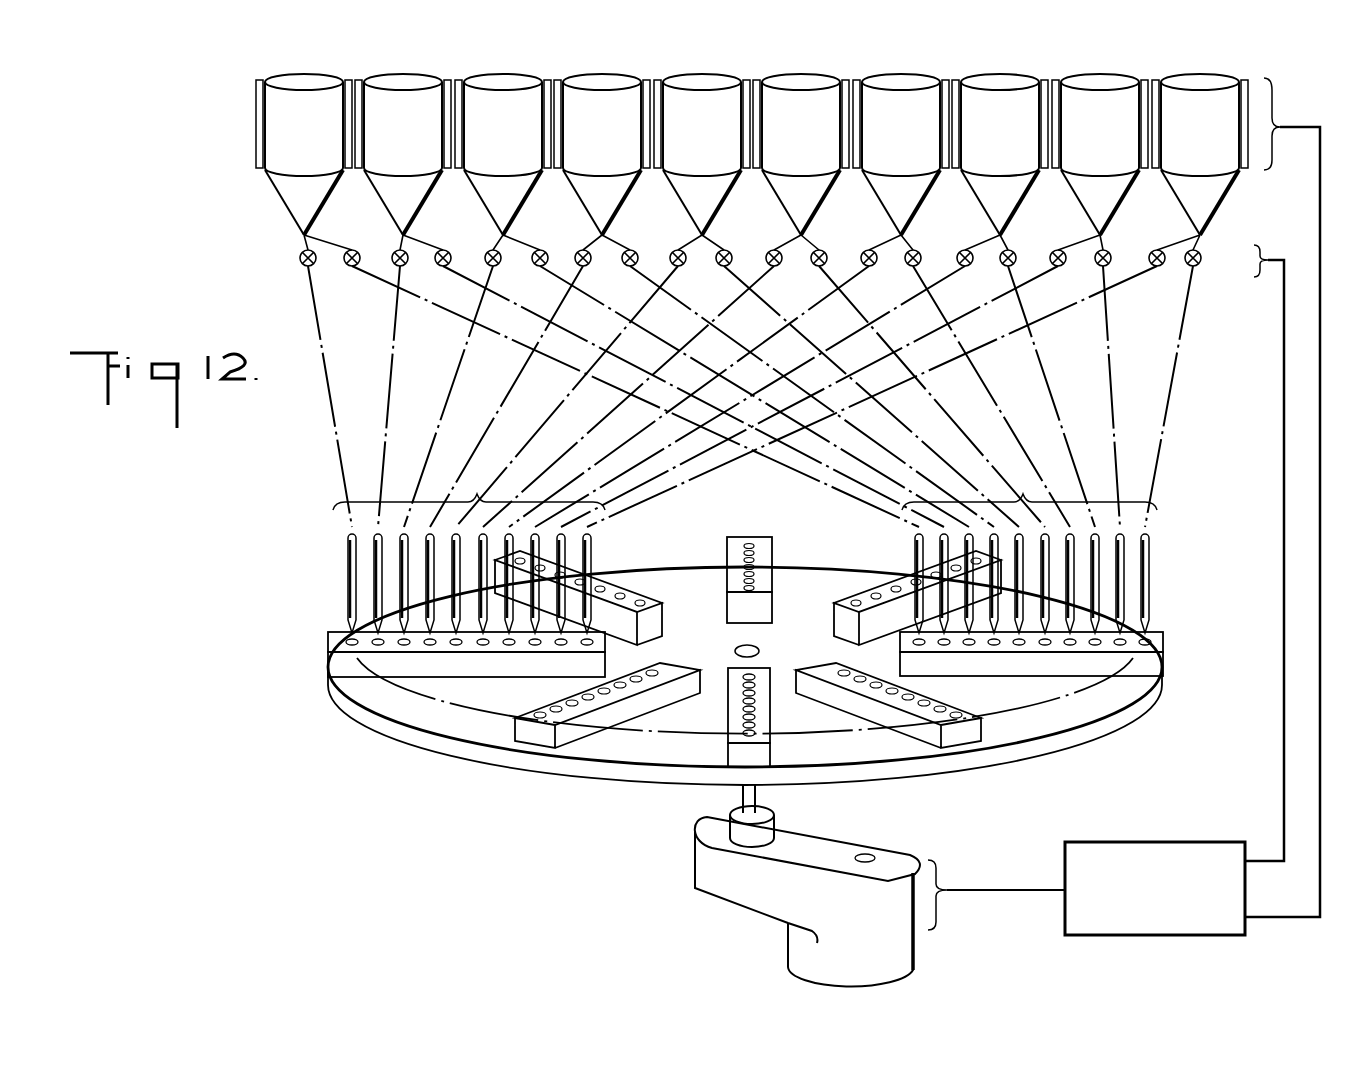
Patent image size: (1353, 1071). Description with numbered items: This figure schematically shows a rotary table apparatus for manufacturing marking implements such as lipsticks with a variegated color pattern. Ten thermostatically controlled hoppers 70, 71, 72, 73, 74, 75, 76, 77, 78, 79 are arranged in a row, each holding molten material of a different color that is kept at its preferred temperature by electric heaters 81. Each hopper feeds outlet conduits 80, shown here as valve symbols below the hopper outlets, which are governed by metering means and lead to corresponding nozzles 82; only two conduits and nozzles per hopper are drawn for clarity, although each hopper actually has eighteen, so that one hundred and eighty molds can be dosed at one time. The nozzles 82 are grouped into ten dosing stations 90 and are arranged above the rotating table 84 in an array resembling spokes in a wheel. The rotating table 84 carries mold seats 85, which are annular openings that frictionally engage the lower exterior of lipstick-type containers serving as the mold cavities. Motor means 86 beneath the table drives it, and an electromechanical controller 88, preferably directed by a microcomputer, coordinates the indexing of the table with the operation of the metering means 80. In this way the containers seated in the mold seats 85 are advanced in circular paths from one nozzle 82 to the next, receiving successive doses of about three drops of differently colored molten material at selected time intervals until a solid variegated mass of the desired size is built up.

The thermostatically controlled hopper 70 is at (293, 143).
The thermostatically controlled hopper 71 is at (392, 143).
The thermostatically controlled hopper 72 is at (492, 143).
The thermostatically controlled hopper 73 is at (591, 143).
The thermostatically controlled hopper 74 is at (691, 143).
The thermostatically controlled hopper 75 is at (790, 143).
The thermostatically controlled hopper 76 is at (890, 143).
The thermostatically controlled hopper 77 is at (989, 143).
The thermostatically controlled hopper 78 is at (1089, 143).
The thermostatically controlled hopper 79 is at (1189, 143).
The outlet conduit 80 is at (352, 268).
The electric heater 81 is at (256, 147).
The nozzle 82 is at (344, 630).
The rotating table 84 is at (392, 727).
The mold seat 85 is at (328, 648).
The motor means 86 is at (718, 888).
The controller 88 is at (1143, 842).
The dosing station 90 is at (745, 490).